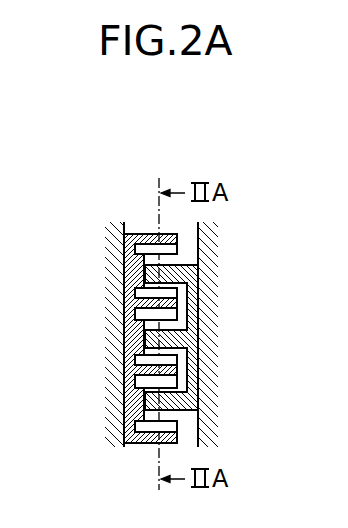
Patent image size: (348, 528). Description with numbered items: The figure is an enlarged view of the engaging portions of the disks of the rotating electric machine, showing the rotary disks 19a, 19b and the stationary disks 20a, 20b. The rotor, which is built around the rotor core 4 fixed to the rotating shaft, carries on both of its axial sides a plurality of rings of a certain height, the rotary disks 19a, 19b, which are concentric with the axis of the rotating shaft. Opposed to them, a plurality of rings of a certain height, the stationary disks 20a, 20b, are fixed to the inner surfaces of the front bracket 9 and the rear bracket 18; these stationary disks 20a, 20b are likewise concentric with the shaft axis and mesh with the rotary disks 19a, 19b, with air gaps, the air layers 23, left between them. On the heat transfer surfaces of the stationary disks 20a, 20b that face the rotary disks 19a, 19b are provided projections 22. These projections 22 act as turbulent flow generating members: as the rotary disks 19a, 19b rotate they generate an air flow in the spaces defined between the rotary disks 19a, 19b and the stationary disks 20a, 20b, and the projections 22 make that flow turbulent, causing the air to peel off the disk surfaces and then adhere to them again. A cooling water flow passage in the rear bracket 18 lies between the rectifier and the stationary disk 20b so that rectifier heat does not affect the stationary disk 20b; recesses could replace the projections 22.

The rotor core 4 is at (210, 382).
The front bracket 9 is at (172, 334).
The rear bracket 18 is at (120, 298).
The rotary disk 19a is at (171, 337).
The rotary disk 19b is at (167, 340).
The stationary disk 20a is at (174, 328).
The stationary disk 20b is at (122, 276).
The projection 22 is at (170, 290).
The air layer 23 is at (160, 324).